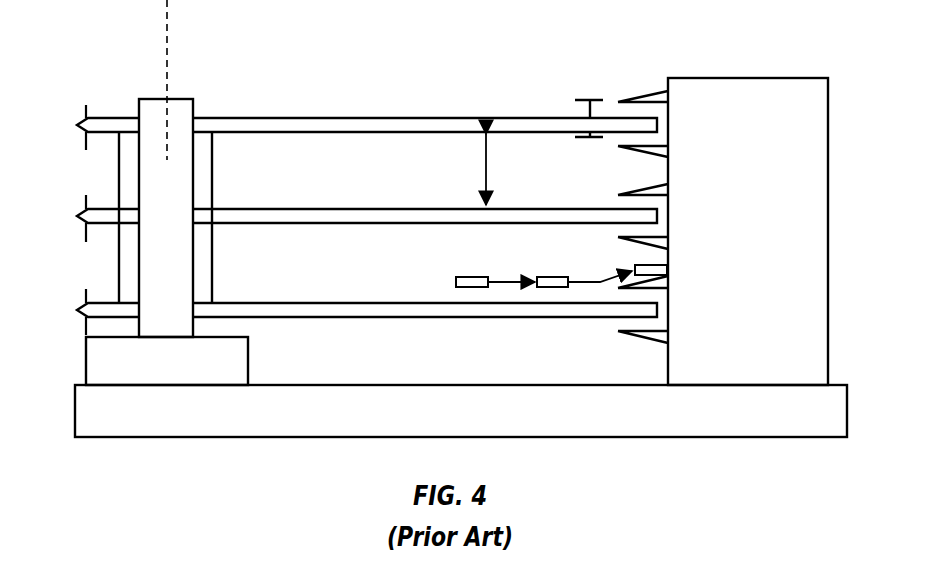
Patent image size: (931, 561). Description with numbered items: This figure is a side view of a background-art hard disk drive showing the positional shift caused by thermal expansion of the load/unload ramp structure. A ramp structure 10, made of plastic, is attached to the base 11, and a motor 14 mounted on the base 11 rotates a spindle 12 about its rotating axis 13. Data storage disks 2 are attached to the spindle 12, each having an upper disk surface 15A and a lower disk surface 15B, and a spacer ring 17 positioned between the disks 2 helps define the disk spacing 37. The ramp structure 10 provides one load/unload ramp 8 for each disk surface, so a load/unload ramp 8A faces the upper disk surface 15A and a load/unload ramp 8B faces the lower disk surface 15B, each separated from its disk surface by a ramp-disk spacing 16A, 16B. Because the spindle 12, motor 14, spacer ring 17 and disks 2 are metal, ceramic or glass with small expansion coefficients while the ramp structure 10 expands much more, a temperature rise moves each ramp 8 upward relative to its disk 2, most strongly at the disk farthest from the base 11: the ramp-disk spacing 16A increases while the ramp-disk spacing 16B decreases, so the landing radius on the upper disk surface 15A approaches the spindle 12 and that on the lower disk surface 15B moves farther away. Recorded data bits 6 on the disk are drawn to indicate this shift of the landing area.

The data storage disk 2 is at (122, 127).
The data bits 6 is at (470, 277).
The load/unload ramp 8 is at (648, 338).
The load/unload ramp on the upper surface side 8A is at (648, 95).
The load/unload ramp on the lower surface side 8B is at (642, 153).
The ramp structure 10 is at (770, 243).
The base 11 is at (478, 425).
The spindle 12 is at (182, 233).
The rotating axis 13 is at (168, 47).
The motor 14 is at (182, 375).
The upper disk surface 15A is at (381, 118).
The lower disk surface 15B is at (331, 133).
The ramp-disk spacing 16A is at (589, 98).
The ramp-disk spacing 16B is at (585, 140).
The spacer ring 17 is at (215, 182).
The disk spacing 37 is at (484, 177).